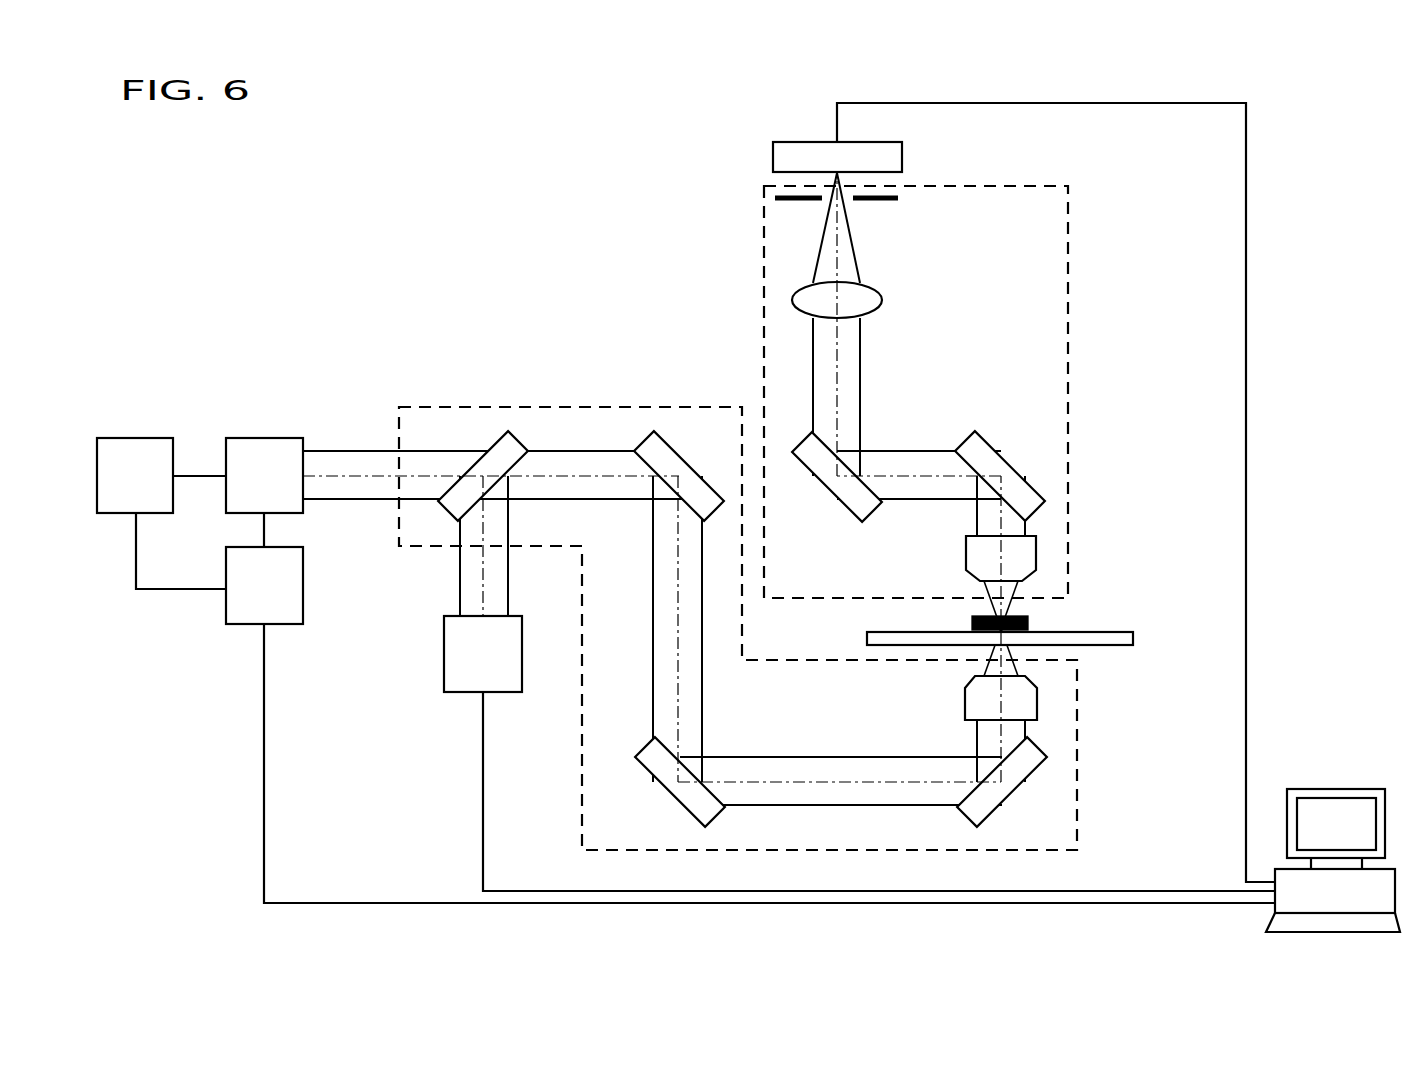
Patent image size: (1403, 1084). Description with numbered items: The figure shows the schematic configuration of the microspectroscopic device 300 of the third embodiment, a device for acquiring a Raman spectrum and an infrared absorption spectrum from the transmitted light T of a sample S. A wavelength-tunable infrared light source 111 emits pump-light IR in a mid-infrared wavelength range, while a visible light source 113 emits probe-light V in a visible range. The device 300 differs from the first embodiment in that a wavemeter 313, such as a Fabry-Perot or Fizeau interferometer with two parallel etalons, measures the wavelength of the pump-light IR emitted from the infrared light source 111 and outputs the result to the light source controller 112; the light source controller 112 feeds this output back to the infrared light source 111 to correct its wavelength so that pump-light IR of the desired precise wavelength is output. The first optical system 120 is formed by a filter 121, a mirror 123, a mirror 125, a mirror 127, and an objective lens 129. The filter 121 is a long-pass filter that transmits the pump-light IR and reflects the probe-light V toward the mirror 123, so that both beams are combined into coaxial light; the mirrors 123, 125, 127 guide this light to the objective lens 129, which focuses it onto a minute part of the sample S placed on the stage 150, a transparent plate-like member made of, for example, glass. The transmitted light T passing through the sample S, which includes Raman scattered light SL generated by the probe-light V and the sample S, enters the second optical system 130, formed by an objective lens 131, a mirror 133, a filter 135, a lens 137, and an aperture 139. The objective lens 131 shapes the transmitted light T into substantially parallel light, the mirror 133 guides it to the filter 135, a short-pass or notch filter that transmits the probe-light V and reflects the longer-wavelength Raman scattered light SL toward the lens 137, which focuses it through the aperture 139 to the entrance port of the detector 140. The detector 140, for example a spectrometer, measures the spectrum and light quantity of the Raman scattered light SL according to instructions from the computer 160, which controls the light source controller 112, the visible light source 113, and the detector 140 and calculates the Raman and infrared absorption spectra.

The microspectroscopic device 300 is at (1316, 137).
The wavemeter 313 is at (142, 437).
The wavelength-tunable infrared light source 111 is at (265, 437).
The light source controller 112 is at (242, 627).
The visible light source 113 is at (448, 693).
The first optical system 120 is at (1077, 662).
The filter 121 is at (488, 437).
The mirror 123 is at (680, 445).
The mirror 125 is at (668, 788).
The mirror 127 is at (1020, 797).
The objective lens 129 is at (1037, 702).
The second optical system 130 is at (1068, 207).
The objective lens 131 is at (1036, 560).
The mirror 133 is at (1010, 457).
The filter 135 is at (818, 483).
The lens 137 is at (882, 300).
The aperture 139 is at (880, 202).
The detector 140 is at (902, 157).
The stage 150 is at (1133, 638).
The computer 160 is at (1360, 790).
The sample S is at (1028, 628).
The pump-light IR is at (333, 473).
The probe-light V is at (482, 593).
The transmitted light T is at (915, 472).
The Raman scattered light SL is at (837, 225).